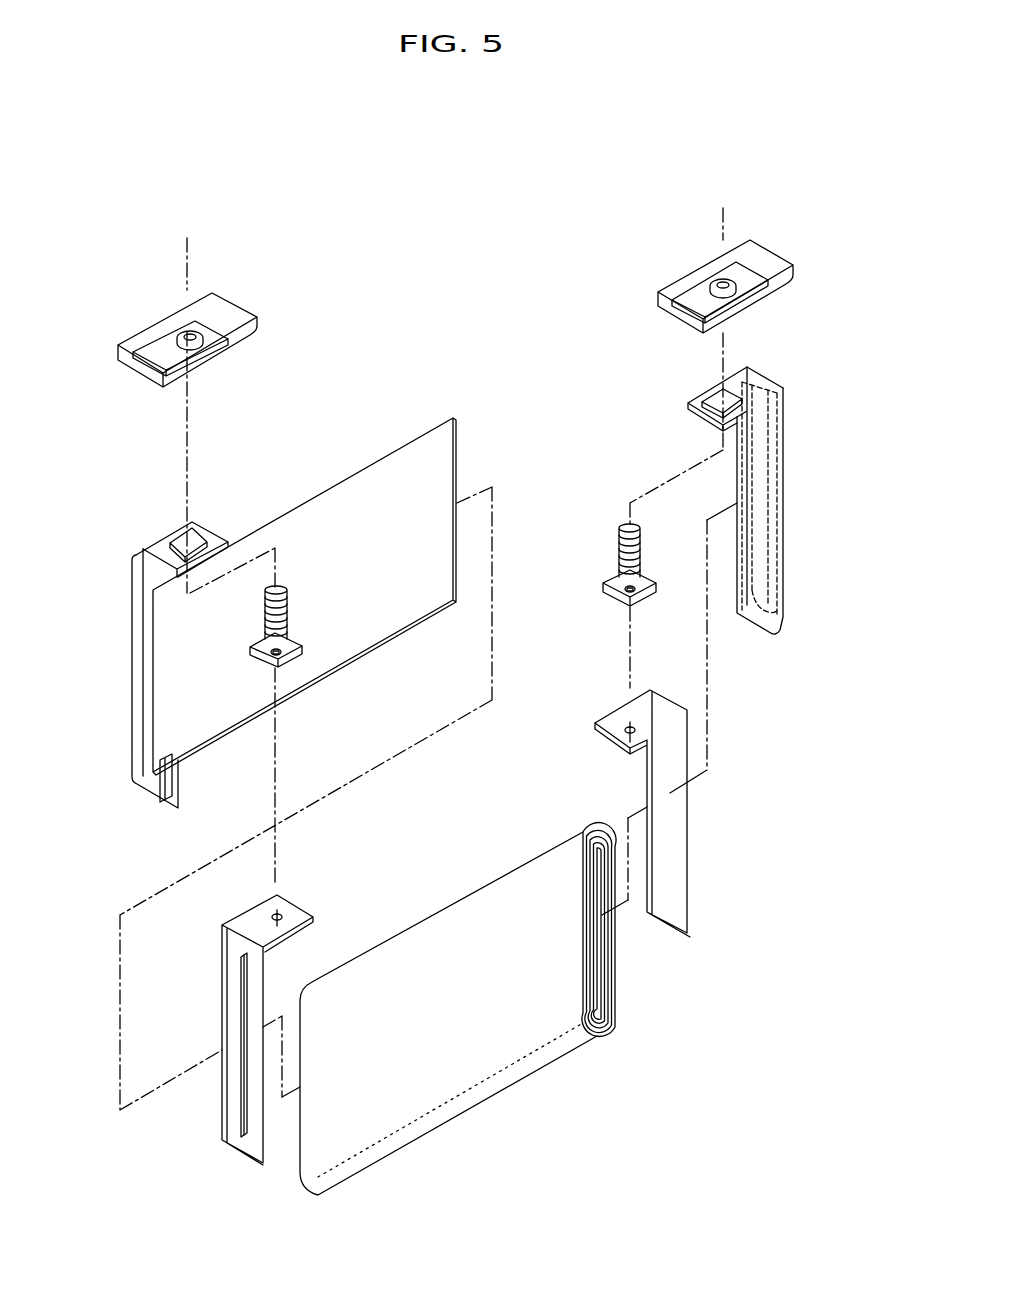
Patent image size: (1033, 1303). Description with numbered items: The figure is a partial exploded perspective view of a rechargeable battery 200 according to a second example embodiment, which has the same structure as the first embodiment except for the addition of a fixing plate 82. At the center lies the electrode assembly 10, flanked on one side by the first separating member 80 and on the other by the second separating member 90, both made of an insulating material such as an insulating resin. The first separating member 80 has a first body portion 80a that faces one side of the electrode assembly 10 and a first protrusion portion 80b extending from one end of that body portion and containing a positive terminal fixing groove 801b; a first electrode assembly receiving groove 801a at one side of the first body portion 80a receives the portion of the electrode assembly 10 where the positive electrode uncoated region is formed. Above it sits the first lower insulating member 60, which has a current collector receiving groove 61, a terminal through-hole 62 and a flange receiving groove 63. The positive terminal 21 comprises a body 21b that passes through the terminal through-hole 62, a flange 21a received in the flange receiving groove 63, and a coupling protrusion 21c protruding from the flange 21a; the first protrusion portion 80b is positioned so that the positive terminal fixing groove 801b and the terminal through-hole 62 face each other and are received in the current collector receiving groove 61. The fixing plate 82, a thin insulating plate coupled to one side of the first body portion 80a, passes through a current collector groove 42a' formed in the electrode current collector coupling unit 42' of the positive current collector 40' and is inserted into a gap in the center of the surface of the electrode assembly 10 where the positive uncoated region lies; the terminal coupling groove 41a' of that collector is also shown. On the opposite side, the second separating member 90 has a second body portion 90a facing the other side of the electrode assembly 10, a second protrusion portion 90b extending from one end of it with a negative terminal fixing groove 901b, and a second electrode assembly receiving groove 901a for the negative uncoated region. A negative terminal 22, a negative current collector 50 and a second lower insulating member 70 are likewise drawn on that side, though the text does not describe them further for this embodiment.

The rechargeable battery 200 is at (451, 213).
The electrode assembly 10 is at (628, 998).
The positive terminal 21 is at (250, 666).
The flange 21a is at (301, 646).
The body 21b is at (287, 606).
The coupling protrusion 21c is at (280, 657).
The second fastening member (bolt) 22 is at (608, 553).
The positive current collector 40' is at (264, 1015).
The fastening hole of side bracket 41a' is at (330, 896).
The electrode current collector coupling unit 42' is at (200, 1045).
The current collector groove 42a' is at (192, 1050).
The fixing bracket 50 is at (698, 833).
The first lower insulating member 60 is at (118, 324).
The current collector receiving groove 61 is at (150, 368).
The terminal through-hole 62 is at (203, 343).
The flange receiving groove 63 is at (197, 347).
The second nut holder 70 is at (779, 238).
The first separating member 80 is at (116, 572).
The first body portion 80a is at (131, 626).
The first protrusion portion 80b is at (145, 544).
The first electrode assembly receiving groove 801a is at (155, 785).
The positive terminal fixing groove 801b is at (175, 538).
The fixing plate 82 is at (358, 466).
The second separating member 90 is at (795, 408).
The second body portion 90a is at (783, 482).
The second protrusion portion 90b is at (703, 396).
The second electrode assembly receiving groove 901a is at (757, 595).
The negative terminal fixing groove 901b is at (718, 407).